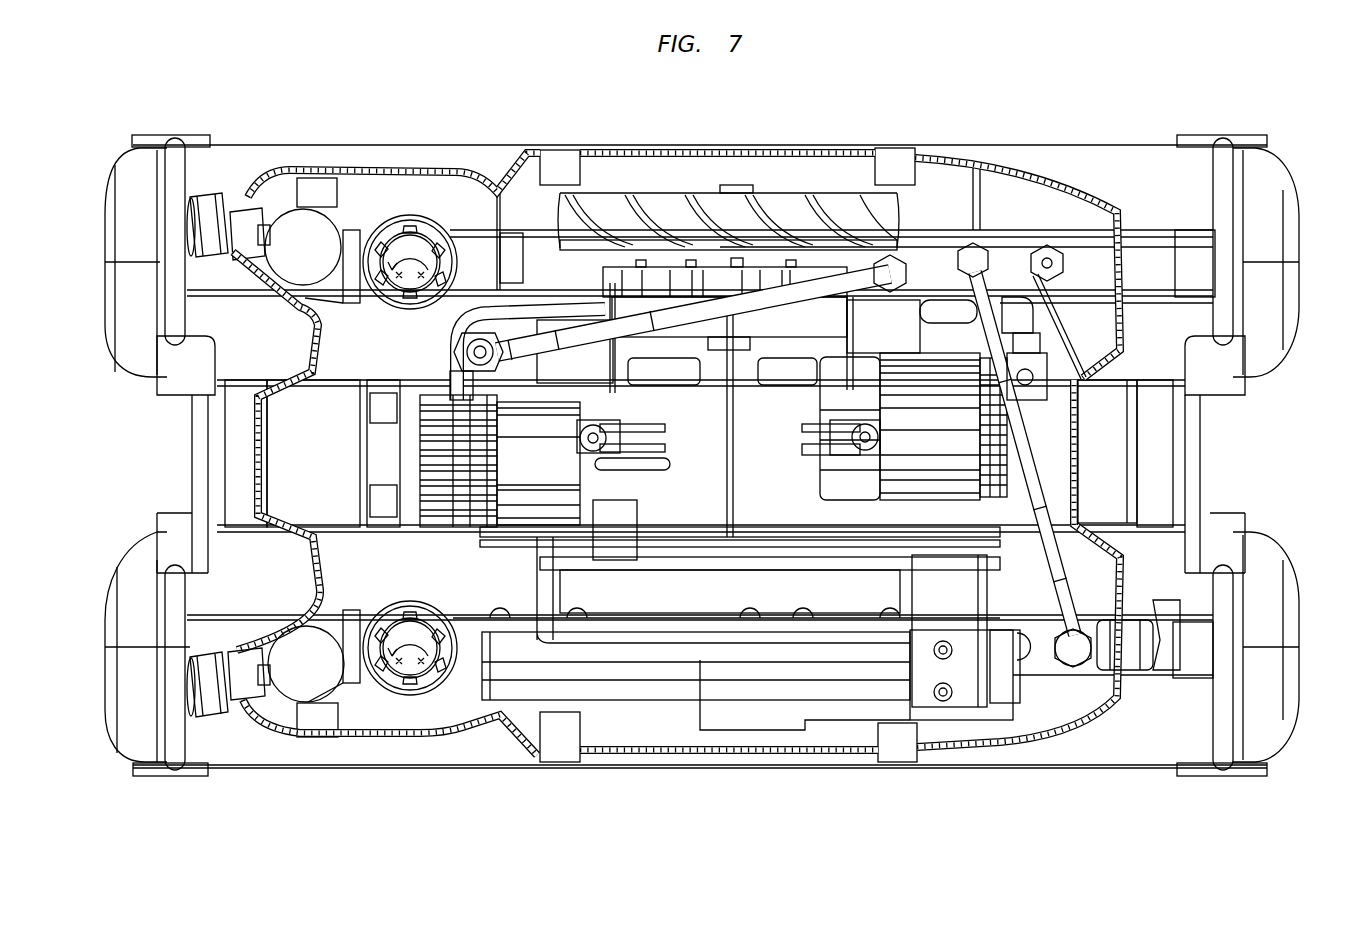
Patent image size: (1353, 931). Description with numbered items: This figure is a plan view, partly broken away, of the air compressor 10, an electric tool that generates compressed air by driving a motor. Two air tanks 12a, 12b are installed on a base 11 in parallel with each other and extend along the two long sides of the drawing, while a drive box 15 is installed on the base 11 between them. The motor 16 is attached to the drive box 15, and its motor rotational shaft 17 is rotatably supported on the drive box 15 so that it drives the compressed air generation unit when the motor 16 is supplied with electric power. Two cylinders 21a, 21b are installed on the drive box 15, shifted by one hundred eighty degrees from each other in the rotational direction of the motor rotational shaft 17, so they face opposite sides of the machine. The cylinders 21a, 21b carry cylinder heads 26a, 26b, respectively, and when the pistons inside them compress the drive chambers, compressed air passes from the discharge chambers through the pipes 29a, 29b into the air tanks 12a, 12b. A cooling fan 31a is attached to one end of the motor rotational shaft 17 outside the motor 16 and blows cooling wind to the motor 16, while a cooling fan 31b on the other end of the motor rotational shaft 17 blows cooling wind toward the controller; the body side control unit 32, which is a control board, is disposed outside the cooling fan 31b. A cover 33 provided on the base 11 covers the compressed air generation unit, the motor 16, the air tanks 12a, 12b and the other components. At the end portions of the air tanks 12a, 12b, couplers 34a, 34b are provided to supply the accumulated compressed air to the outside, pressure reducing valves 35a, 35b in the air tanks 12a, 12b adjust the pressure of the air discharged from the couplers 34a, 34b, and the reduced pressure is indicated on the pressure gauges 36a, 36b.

The air compressor 10 is at (550, 768).
The base 11 is at (1150, 432).
The air tank 12a is at (1132, 182).
The air tank 12b is at (1137, 727).
The drive box 15 is at (765, 467).
The motor 16 is at (620, 312).
The motor rotational shaft 17 is at (730, 565).
The cylinder 21a is at (523, 520).
The cylinder 21b is at (947, 457).
The cylinder head 26a is at (400, 410).
The cylinder head 26b is at (1027, 393).
The pipe 29a is at (510, 317).
The pipe 29b is at (947, 313).
The cooling fan 31a is at (658, 213).
The cooling fan 31b is at (577, 597).
The body side control unit 32 is at (650, 658).
The cover 33 is at (1000, 747).
The coupler 34a is at (211, 232).
The coupler 34b is at (210, 687).
The pressure reducing valve 35a is at (411, 262).
The pressure reducing valve 35b is at (413, 657).
The pressure gauge 36a is at (311, 237).
The pressure gauge 36b is at (318, 677).